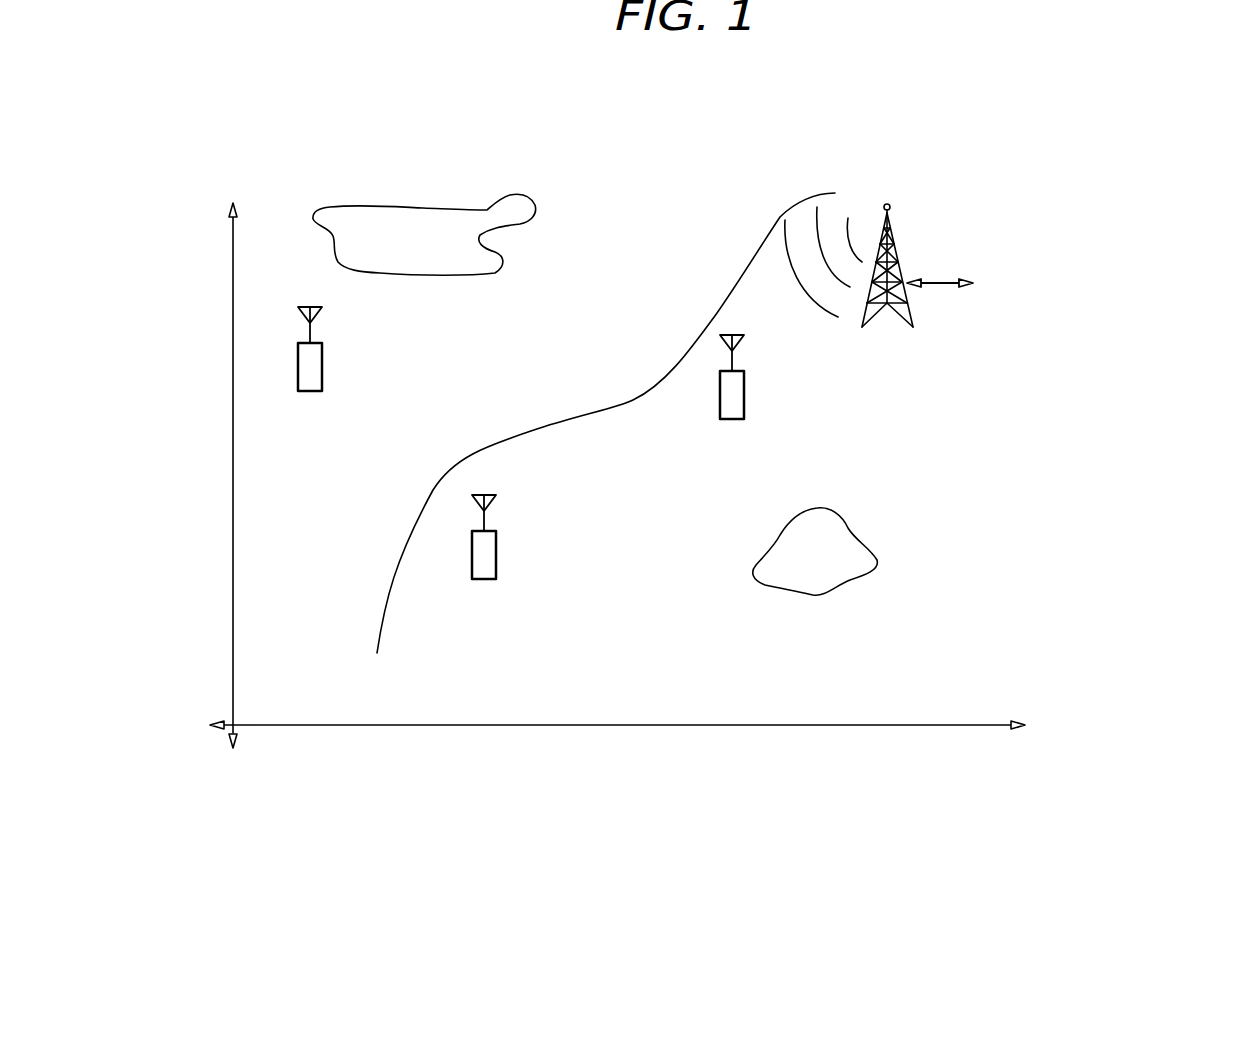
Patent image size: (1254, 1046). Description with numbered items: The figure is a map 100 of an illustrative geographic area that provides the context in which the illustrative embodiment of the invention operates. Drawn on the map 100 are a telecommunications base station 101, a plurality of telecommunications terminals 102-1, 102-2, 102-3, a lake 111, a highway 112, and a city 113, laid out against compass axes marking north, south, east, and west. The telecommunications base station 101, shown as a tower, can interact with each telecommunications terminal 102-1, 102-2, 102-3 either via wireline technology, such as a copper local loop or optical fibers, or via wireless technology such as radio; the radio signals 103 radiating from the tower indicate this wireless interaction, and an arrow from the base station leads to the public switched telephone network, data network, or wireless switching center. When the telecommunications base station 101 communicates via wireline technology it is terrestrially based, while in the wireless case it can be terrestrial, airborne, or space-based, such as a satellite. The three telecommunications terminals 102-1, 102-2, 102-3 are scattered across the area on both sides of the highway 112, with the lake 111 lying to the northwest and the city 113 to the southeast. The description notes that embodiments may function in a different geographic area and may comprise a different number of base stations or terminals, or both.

The map 100 is at (707, 77).
The telecommunications base station 101 is at (878, 313).
The telecommunications terminal 102-1 is at (305, 392).
The telecommunications terminal 102-2 is at (480, 580).
The telecommunications terminal 102-3 is at (728, 420).
The radio signals 103 is at (832, 310).
The lake 111 is at (427, 277).
The highway 112 is at (577, 420).
The city 113 is at (822, 597).